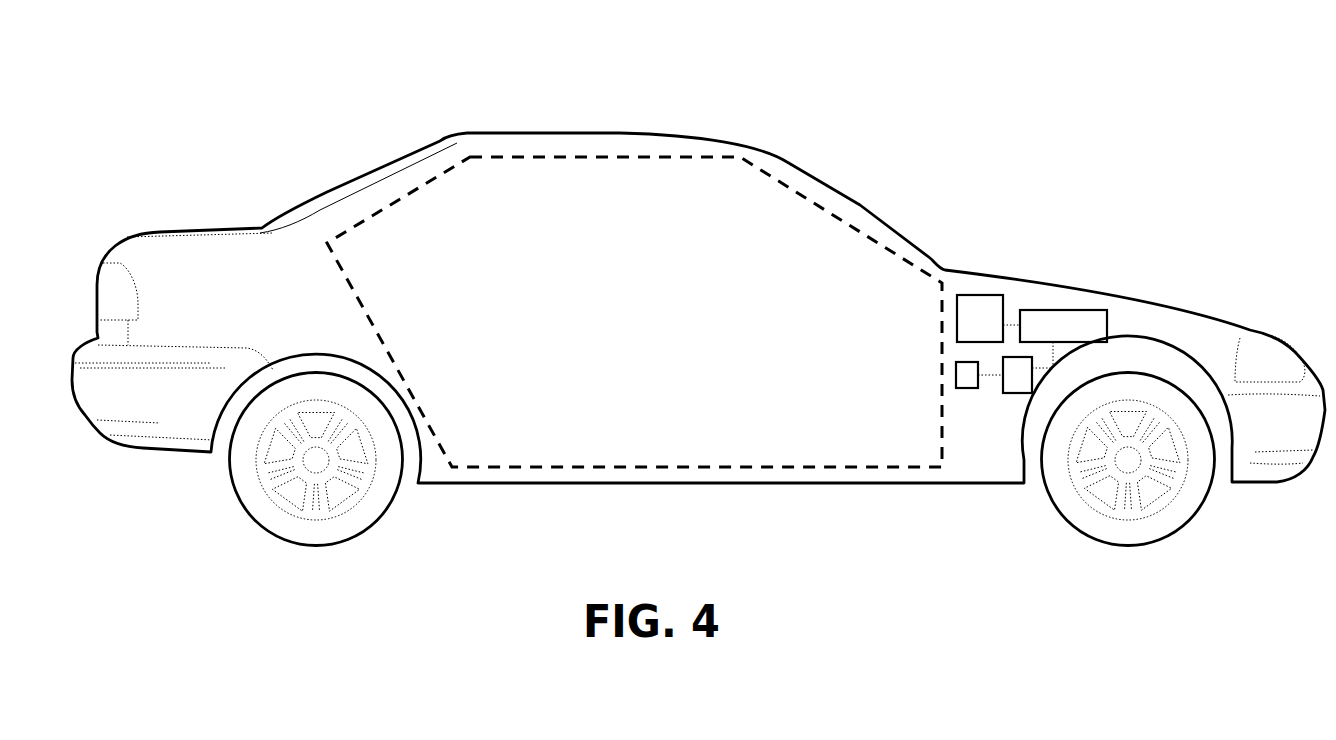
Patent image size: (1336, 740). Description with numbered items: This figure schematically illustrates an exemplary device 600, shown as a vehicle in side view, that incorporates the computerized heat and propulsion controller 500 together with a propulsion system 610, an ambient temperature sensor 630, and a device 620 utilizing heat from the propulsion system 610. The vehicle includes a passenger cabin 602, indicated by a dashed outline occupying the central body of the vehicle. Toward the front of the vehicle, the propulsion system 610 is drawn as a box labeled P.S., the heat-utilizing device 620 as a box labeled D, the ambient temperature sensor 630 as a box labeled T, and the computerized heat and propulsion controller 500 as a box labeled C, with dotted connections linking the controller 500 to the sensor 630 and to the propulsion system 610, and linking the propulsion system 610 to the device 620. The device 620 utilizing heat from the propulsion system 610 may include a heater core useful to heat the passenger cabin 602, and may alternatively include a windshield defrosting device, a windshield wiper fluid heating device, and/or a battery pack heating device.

The device 600 is at (787, 162).
The passenger cabin 602 is at (607, 157).
The device utilizing heat from the propulsion system 620 is at (982, 295).
The propulsion system 610 is at (1043, 310).
The ambient temperature sensor 630 is at (968, 390).
The computerized heat and propulsion controller 500 is at (1018, 393).